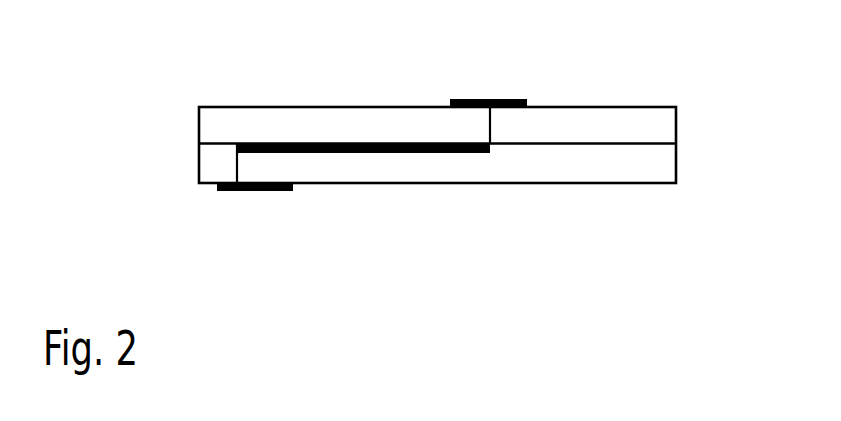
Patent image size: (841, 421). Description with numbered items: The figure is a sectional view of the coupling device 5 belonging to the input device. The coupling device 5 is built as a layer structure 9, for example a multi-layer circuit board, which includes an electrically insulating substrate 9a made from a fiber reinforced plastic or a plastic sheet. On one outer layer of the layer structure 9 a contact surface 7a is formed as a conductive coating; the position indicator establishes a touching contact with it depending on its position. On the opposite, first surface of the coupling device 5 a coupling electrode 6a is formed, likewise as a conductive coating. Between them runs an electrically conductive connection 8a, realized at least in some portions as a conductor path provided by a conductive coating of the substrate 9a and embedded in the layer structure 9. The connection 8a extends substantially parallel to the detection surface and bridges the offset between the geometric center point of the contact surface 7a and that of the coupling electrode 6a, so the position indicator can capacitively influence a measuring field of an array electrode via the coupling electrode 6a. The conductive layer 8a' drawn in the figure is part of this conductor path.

The coupling device 5 is at (255, 81).
The layer structure 9 is at (674, 107).
The substrate 9a is at (660, 162).
The conductive connection 8a is at (186, 170).
The conductive layer 8a' is at (363, 102).
The contact surface 7a is at (510, 98).
The coupling electrode 6a is at (261, 192).